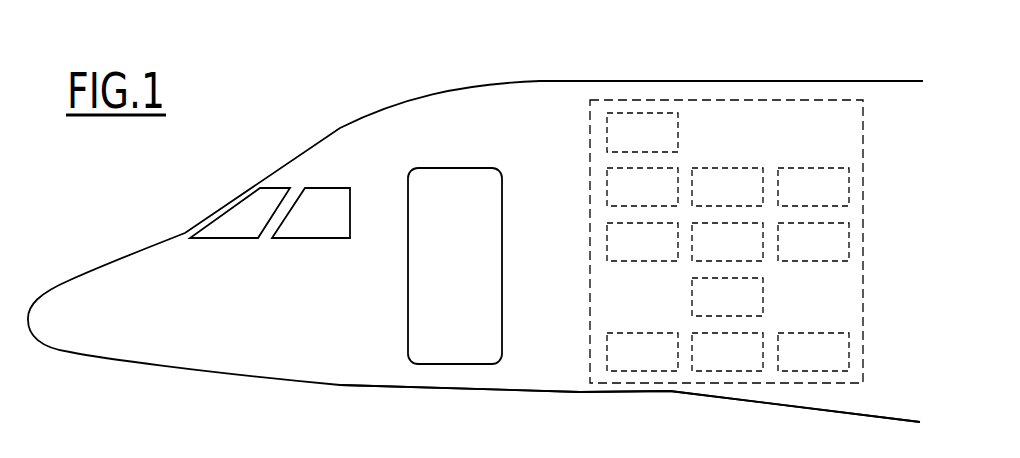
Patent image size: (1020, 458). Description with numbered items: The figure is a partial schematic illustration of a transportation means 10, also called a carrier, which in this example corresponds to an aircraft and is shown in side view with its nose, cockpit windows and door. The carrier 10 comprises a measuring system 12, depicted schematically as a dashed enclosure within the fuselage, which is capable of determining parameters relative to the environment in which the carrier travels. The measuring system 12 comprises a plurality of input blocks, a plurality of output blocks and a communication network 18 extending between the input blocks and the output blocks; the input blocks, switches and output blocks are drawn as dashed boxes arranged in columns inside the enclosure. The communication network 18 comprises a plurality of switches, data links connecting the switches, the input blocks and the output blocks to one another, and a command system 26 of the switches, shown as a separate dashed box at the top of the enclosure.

The transportation means 10 is at (831, 64).
The measuring system 12 is at (743, 385).
The communication network 18 is at (726, 279).
The command system 26 is at (642, 132).